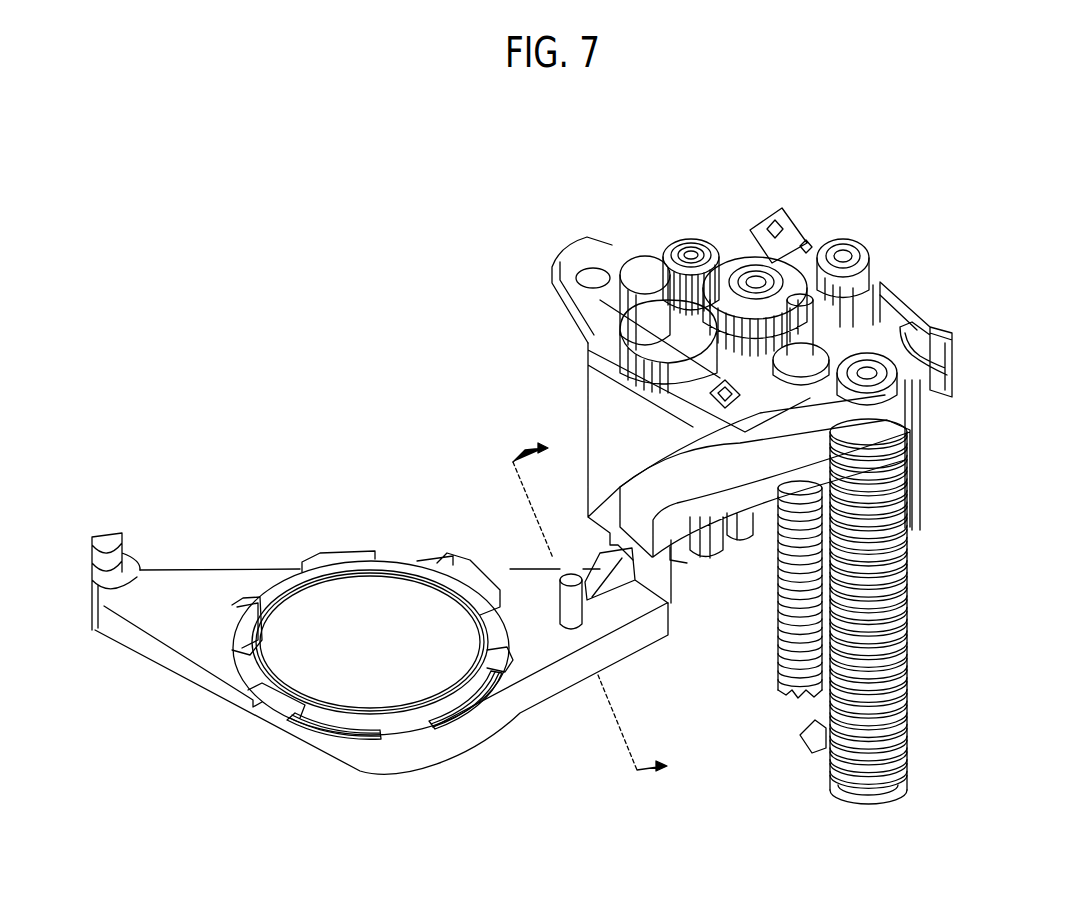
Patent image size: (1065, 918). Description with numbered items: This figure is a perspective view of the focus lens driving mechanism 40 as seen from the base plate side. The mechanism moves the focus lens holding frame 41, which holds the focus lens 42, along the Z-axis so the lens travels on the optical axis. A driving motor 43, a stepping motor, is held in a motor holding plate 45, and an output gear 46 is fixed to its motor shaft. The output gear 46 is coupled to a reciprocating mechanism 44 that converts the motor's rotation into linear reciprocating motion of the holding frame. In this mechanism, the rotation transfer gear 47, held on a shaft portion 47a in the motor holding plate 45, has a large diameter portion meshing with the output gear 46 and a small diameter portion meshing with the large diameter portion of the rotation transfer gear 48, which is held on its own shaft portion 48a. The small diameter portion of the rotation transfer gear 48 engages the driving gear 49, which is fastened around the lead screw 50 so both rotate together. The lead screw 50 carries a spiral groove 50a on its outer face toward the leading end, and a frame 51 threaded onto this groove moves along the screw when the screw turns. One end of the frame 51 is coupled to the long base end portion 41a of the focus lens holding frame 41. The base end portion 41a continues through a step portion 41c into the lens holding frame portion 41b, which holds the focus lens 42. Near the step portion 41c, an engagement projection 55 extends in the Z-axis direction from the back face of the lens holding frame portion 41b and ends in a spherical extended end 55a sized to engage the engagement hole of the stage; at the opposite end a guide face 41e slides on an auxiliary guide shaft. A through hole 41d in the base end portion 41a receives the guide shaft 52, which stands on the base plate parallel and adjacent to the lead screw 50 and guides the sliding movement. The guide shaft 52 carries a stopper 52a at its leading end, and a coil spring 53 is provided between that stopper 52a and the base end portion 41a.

The focus lens driving mechanism 40 is at (322, 218).
The focus lens holding frame 41 is at (270, 553).
The base end portion 41a is at (775, 462).
The lens holding frame portion 41b is at (183, 633).
The step portion 41c is at (665, 602).
The through hole 41d is at (885, 287).
The guide face 41e is at (110, 530).
The focus lens 42 is at (313, 693).
The driving motor 43 is at (600, 410).
The reciprocating mechanism 44 is at (1028, 132).
The motor holding plate 45 is at (603, 320).
The output gear 46 is at (645, 262).
The rotation transfer gear 47 is at (698, 232).
The shaft portion 47a is at (697, 252).
The rotation transfer gear 48 is at (740, 240).
The shaft portion 48a is at (752, 268).
The driving gear 49 is at (792, 235).
The lead screw 50 is at (913, 433).
The spiral groove 50a is at (785, 612).
The frame 51 is at (812, 295).
The guide shaft 52 is at (900, 563).
The stopper 52a is at (878, 800).
The coil spring 53 is at (918, 558).
The engagement projection 55 is at (553, 607).
The extended end 55a is at (573, 577).